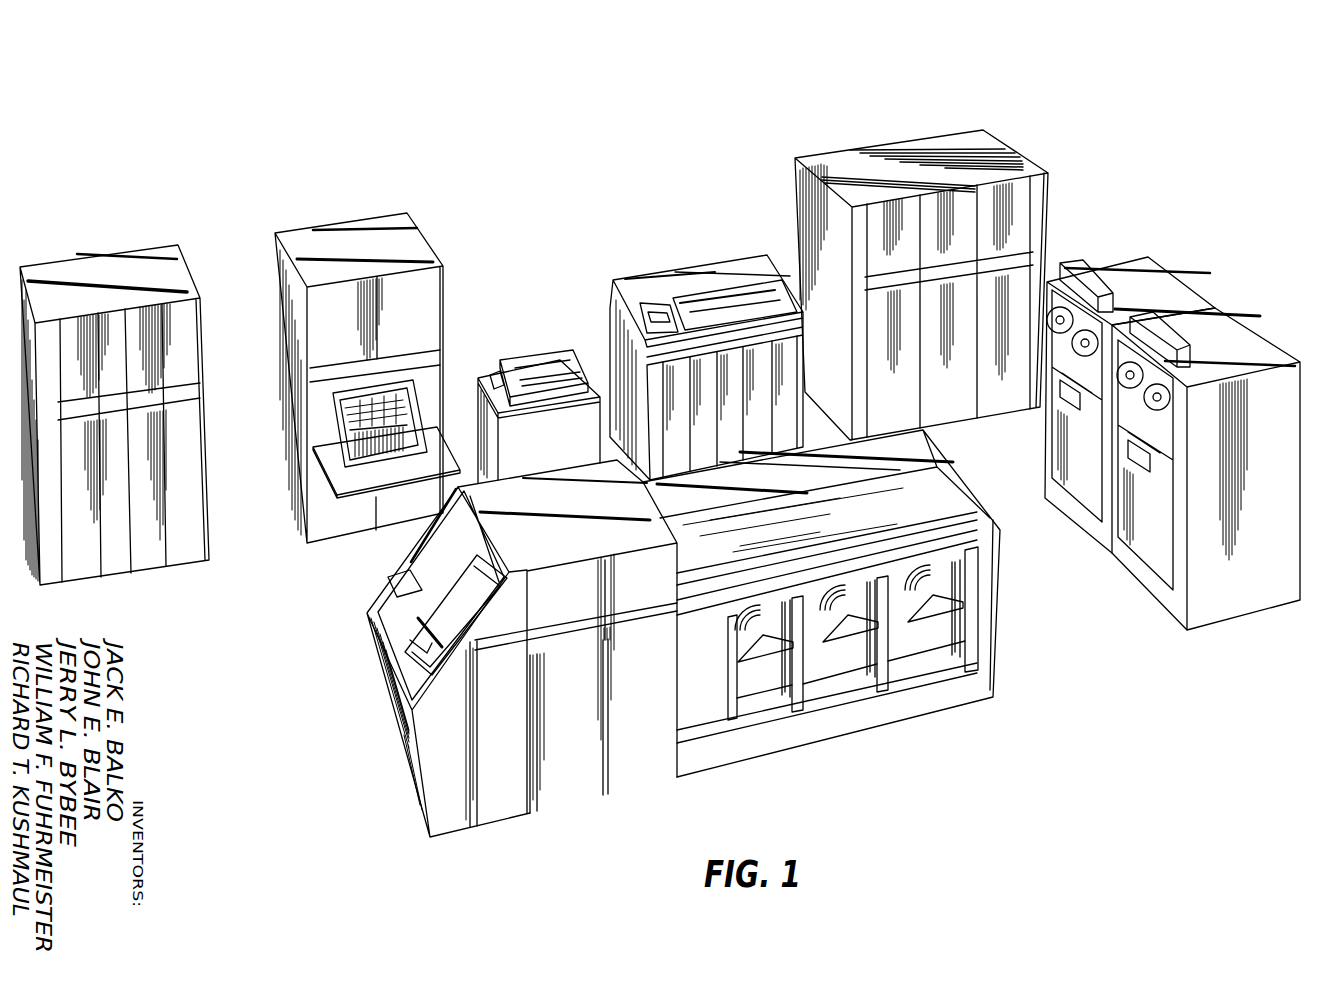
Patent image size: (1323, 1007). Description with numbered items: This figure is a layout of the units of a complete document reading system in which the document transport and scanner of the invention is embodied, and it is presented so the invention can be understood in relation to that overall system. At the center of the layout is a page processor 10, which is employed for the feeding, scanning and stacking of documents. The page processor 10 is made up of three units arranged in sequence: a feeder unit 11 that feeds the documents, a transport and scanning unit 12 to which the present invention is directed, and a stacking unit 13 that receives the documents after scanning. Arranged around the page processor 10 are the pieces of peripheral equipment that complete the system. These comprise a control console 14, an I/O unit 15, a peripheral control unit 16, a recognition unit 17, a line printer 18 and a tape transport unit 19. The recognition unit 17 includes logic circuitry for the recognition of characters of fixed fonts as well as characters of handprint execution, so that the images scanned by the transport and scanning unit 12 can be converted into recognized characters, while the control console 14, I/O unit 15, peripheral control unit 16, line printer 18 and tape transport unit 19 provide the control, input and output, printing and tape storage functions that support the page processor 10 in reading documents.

The page processor 10 is at (748, 787).
The feeder unit 11 is at (465, 812).
The transport and scanning unit 12 is at (603, 792).
The stacking unit 13 is at (845, 730).
The control console 14 is at (362, 225).
The I/O unit 15 is at (548, 350).
The peripheral control unit 16 is at (117, 248).
The recognition unit 17 is at (895, 143).
The line printer 18 is at (710, 262).
The tape transport unit 19 is at (1215, 308).